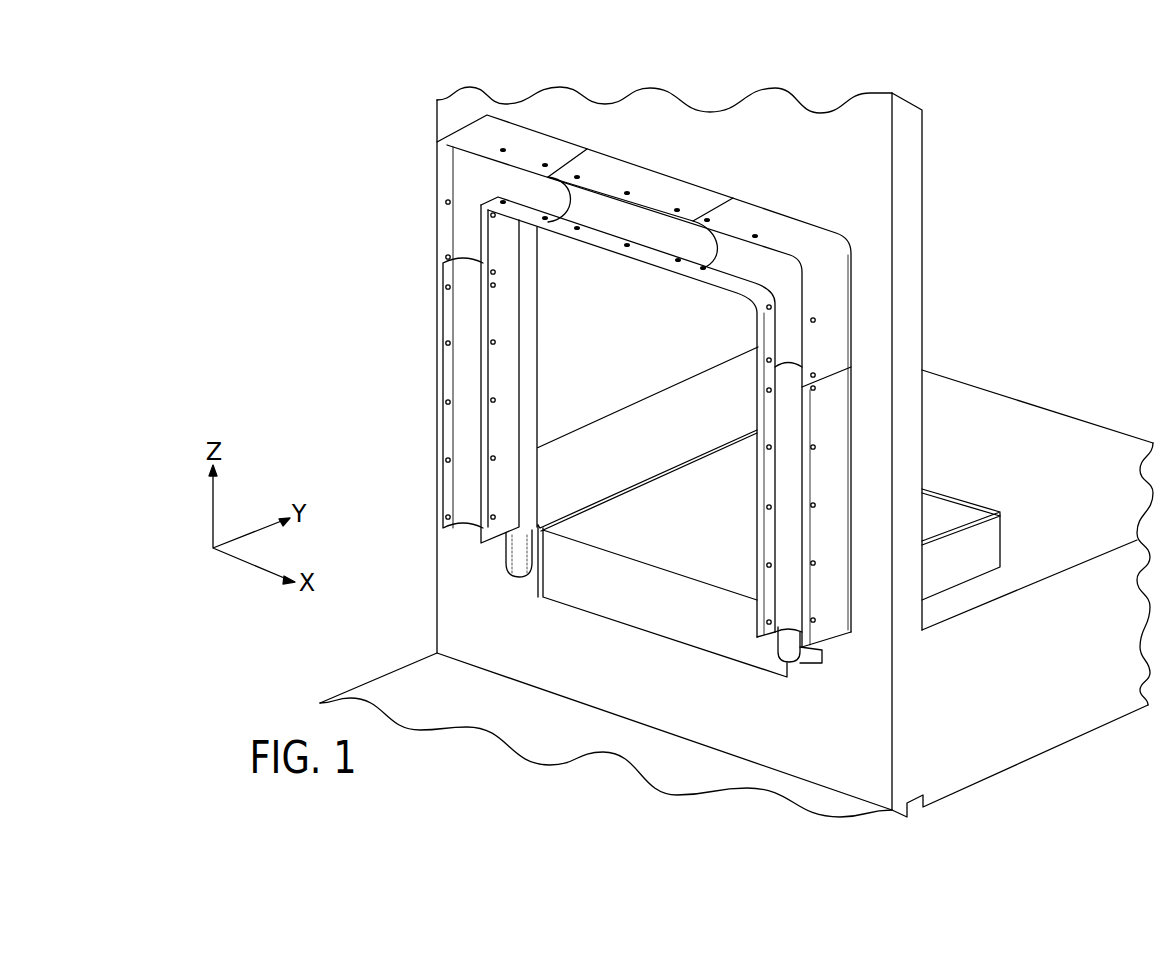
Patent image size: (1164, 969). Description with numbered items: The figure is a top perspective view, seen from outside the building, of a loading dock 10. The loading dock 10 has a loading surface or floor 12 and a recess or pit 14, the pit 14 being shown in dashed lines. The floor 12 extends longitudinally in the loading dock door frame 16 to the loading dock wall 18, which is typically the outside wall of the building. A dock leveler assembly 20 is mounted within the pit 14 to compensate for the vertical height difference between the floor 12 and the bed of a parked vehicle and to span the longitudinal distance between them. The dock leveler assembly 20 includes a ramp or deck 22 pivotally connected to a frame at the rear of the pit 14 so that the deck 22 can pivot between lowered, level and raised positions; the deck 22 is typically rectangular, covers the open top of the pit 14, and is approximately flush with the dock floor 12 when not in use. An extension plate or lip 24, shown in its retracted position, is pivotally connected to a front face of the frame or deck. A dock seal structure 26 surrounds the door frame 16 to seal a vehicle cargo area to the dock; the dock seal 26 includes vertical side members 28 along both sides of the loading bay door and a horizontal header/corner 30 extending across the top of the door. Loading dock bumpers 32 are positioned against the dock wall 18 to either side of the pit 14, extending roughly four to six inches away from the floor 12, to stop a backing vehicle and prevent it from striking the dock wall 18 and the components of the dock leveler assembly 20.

The loading dock 10 is at (376, 154).
The loading surface or floor 12 is at (590, 476).
The recess or pit 14 is at (955, 566).
The loading dock door frame 16 is at (862, 504).
The loading dock wall 18 is at (667, 699).
The dock leveler assembly 20 is at (957, 518).
The ramp or deck 22 is at (685, 544).
The extension plate or lip 24 is at (614, 601).
The dock seal structure 26 is at (820, 233).
The vertical side members 28 is at (443, 383).
The horizontal header/corner 30 is at (668, 185).
The loading dock bumper 32 is at (516, 573).